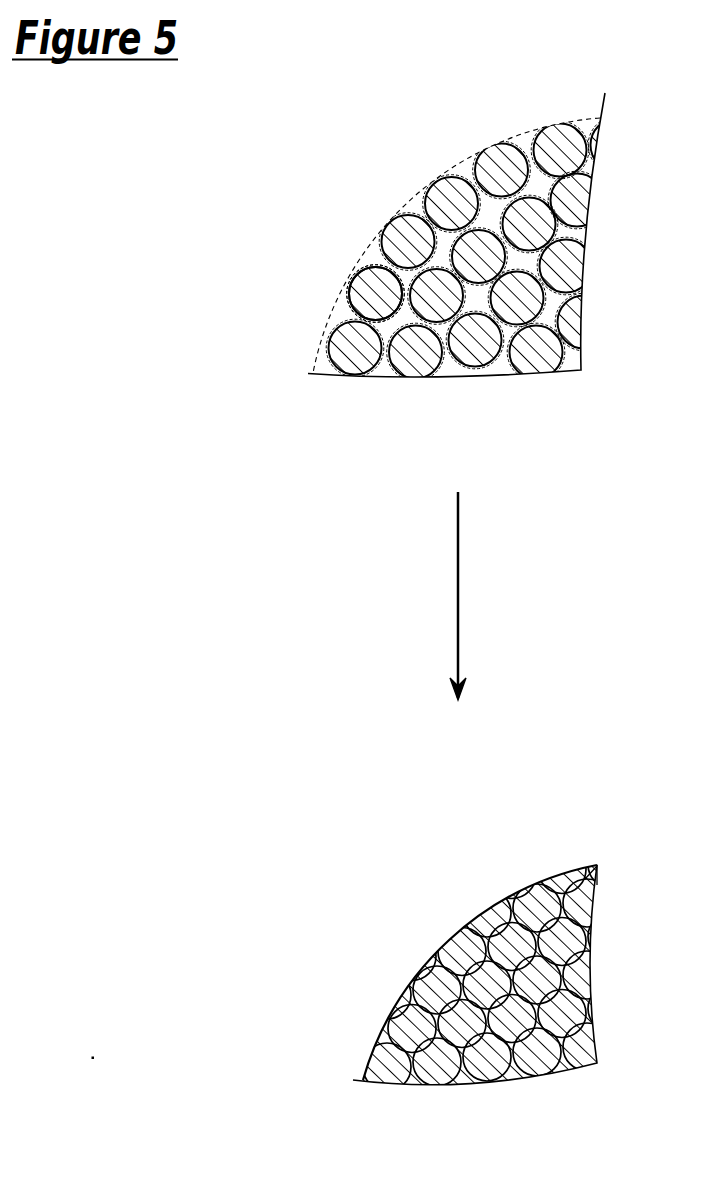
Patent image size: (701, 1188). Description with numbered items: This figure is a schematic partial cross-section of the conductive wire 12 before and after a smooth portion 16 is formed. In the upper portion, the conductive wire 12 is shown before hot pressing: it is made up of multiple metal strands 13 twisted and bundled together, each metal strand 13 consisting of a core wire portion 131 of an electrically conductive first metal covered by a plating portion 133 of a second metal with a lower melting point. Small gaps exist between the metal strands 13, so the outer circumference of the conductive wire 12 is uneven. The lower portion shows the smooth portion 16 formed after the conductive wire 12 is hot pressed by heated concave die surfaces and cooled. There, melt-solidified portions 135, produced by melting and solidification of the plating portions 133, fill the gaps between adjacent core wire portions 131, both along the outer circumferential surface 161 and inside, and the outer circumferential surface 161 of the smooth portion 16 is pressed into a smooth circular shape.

The conductive wire 12 is at (433, 169).
The metal strands 13 is at (545, 135).
The core wire portion 131 is at (350, 278).
The plating portion 133 is at (350, 296).
The melt-solidified portions 135 is at (408, 995).
The smooth portion 16 is at (510, 895).
The outer circumferential surface 161 is at (565, 873).